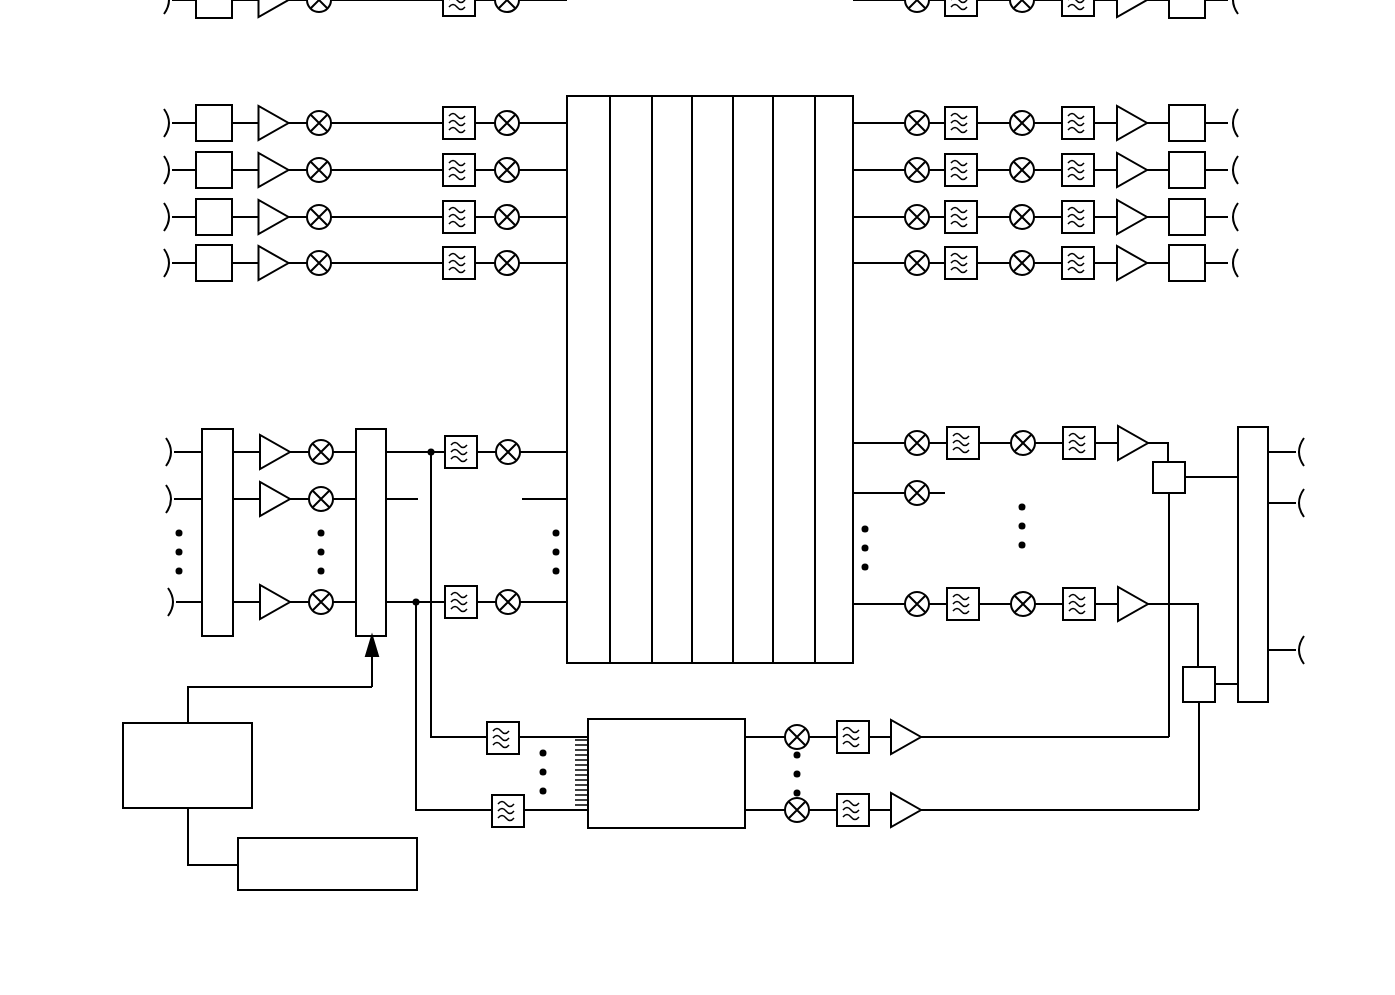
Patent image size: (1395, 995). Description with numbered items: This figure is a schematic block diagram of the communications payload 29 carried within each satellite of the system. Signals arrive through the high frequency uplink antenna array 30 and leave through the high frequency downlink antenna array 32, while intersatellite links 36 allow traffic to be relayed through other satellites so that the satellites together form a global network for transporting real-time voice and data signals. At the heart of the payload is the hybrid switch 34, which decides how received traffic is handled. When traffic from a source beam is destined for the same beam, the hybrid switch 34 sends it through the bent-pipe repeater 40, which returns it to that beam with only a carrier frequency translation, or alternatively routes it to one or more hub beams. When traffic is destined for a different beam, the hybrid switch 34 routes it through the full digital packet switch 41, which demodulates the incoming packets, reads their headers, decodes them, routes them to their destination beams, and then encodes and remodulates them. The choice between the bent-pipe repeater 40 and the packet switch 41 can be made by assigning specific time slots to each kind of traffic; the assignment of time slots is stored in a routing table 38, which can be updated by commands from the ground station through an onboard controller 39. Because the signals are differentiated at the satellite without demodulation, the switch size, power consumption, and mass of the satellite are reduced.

The communications payload 29 is at (510, 62).
The full digital packet switch 41 is at (713, 96).
The intersatellite links 36 is at (143, 168).
The high frequency uplink antenna array 30 is at (142, 592).
The hybrid switch 34 is at (370, 429).
The high frequency downlink antenna array 32 is at (1318, 428).
The routing table 38 is at (122, 757).
The controller 39 is at (303, 838).
The bent-pipe repeater 40 is at (681, 830).